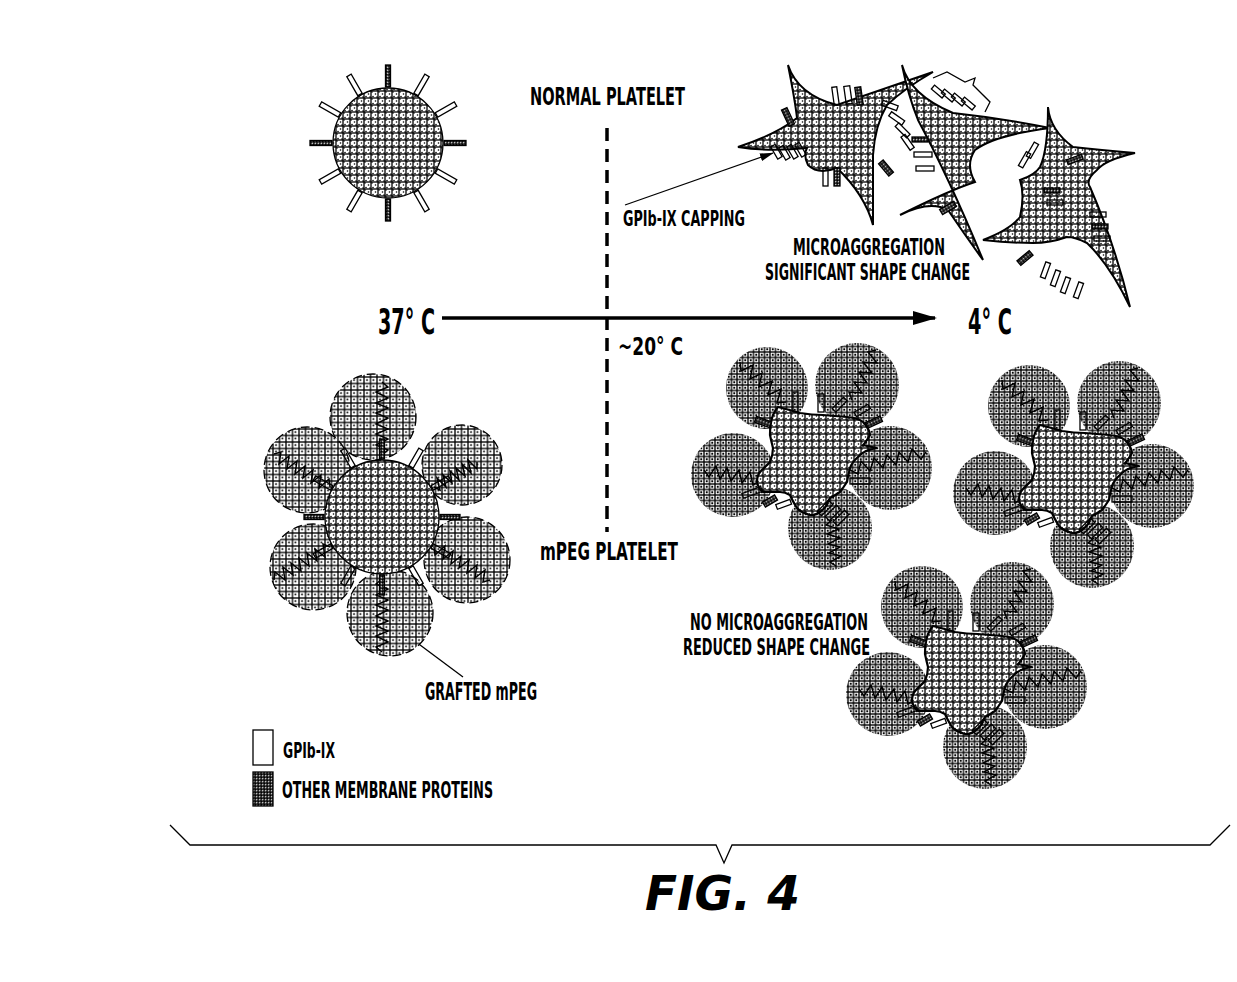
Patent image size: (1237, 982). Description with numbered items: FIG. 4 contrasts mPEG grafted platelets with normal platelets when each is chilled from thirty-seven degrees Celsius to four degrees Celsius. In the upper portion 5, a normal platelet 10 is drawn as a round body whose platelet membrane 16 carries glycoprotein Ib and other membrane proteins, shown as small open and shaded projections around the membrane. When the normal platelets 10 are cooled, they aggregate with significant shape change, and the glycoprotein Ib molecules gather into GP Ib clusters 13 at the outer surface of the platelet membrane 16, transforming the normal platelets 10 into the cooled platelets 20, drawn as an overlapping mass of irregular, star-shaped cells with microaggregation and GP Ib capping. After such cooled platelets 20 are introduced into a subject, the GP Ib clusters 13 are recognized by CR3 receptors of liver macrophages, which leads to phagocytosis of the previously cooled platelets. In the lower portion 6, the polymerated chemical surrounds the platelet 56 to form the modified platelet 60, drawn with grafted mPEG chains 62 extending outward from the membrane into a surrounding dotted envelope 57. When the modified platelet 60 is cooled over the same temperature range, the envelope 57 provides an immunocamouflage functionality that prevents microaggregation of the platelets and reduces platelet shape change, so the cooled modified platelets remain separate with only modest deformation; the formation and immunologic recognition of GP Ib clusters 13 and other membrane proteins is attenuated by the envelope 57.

The upper portion 5 is at (245, 143).
The normal platelet 10 is at (292, 98).
The platelet membrane 16 is at (424, 88).
The GP Ib clusters 13 is at (977, 78).
The cooled platelets 20 is at (1072, 83).
The lower portion 6 is at (262, 390).
The platelet 56 is at (399, 532).
The envelope 57 is at (477, 440).
The modified platelet 60 is at (455, 407).
The mPEG polymer chain 62 is at (478, 464).